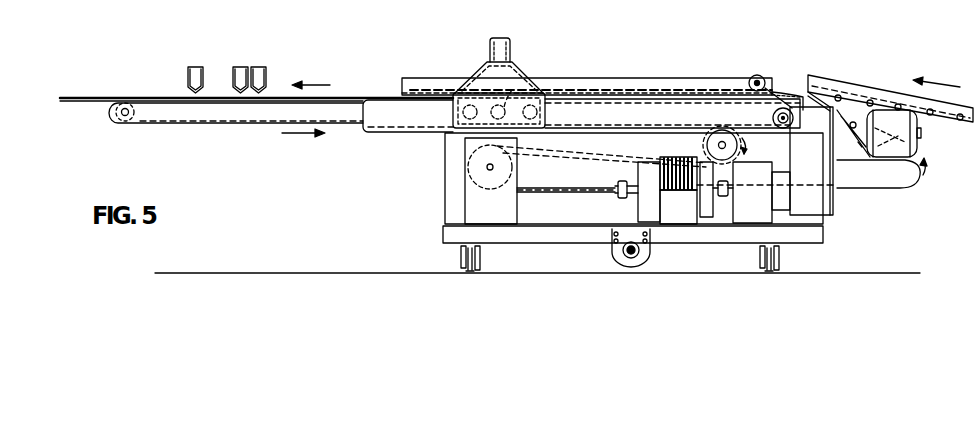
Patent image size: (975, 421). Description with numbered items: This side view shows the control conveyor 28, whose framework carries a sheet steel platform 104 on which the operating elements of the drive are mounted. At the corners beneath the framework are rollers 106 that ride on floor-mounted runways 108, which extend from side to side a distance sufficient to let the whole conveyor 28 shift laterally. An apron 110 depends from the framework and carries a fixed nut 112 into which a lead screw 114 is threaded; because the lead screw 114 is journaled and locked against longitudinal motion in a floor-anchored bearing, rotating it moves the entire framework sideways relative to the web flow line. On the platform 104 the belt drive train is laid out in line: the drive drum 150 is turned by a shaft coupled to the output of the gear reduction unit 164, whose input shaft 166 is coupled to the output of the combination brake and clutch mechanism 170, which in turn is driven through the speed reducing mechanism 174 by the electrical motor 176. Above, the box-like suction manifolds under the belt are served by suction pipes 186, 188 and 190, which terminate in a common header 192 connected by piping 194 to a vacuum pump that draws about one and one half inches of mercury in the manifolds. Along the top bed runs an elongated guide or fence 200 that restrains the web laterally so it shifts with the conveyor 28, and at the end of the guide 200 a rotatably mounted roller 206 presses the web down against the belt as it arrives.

The conveyor 28 is at (795, 70).
The platform 104 is at (620, 225).
The rollers 106 is at (462, 253).
The runways 108 is at (470, 274).
The apron 110 is at (612, 250).
The nut 112 is at (631, 260).
The lead screw 114 is at (650, 254).
The drive drum 150 is at (522, 188).
The gear reduction unit 164 is at (508, 218).
The input shaft 166 is at (532, 193).
The brake and clutch mechanism 170 is at (694, 218).
The speed reducing mechanism 174 is at (826, 156).
The electrical motor 176 is at (917, 134).
The suction pipe 186 is at (455, 112).
The suction pipe 188 is at (515, 88).
The suction pipe 190 is at (548, 112).
The header 192 is at (482, 72).
The piping 194 is at (490, 50).
The guide 200 is at (645, 80).
The roller 206 is at (752, 76).